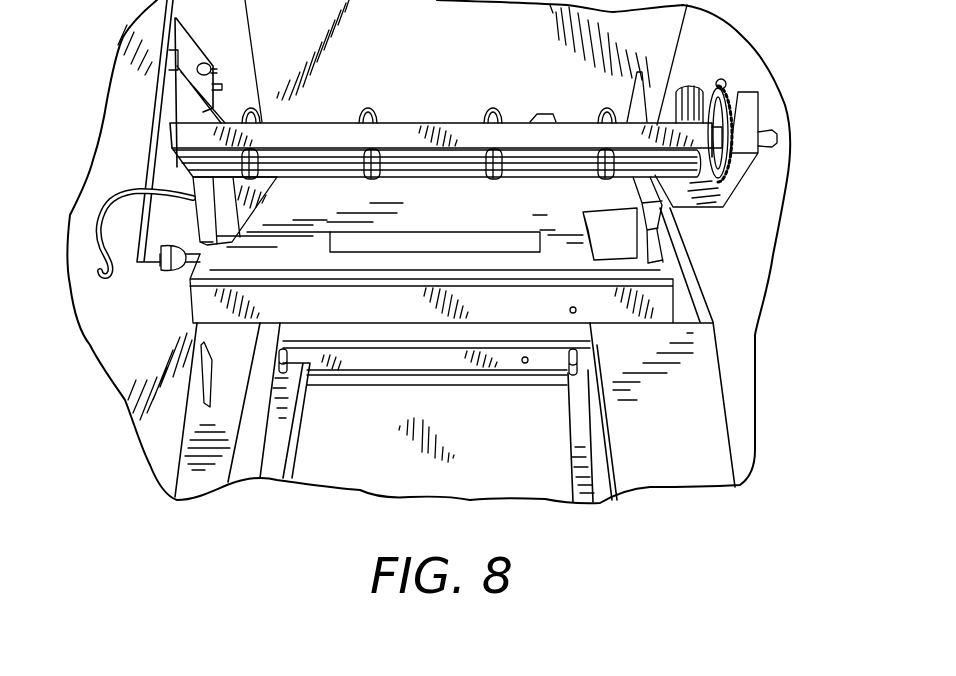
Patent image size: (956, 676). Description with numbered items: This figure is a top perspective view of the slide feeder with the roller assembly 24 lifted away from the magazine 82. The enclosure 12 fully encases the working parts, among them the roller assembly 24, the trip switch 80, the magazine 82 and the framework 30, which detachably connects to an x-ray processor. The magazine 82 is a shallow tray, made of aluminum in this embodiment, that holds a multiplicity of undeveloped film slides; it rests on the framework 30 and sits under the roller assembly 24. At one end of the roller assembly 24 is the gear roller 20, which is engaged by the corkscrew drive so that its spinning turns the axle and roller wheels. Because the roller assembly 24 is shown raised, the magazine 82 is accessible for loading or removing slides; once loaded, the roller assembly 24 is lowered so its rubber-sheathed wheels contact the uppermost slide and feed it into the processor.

The enclosure 12 is at (475, 68).
The roller assembly 24 is at (567, 133).
The gear roller 20 is at (724, 156).
The magazine 82 is at (470, 215).
The framework 30 is at (587, 477).
The trip switch 80 is at (100, 248).